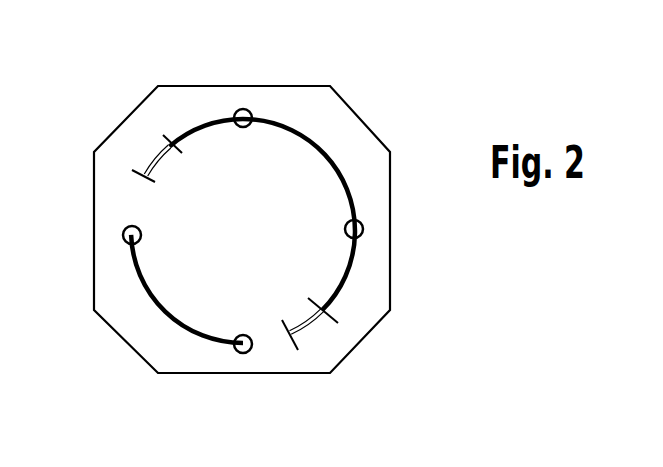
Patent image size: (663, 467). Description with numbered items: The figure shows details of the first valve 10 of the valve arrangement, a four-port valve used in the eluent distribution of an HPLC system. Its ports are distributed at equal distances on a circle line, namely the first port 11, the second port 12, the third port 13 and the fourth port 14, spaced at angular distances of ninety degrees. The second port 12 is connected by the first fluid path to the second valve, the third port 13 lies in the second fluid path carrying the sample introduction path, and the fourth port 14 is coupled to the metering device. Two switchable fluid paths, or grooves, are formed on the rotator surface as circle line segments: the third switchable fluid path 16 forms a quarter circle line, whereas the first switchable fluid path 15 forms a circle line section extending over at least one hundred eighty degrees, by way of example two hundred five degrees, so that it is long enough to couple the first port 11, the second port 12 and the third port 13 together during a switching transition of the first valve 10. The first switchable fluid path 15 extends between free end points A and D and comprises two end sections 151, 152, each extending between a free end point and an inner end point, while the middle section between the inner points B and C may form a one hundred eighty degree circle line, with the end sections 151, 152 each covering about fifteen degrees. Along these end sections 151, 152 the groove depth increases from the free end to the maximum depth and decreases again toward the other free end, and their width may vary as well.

The first valve 10 is at (330, 86).
The first port 11 is at (363, 228).
The second port 12 is at (244, 109).
The third port 13 is at (243, 353).
The fourth port 14 is at (123, 235).
The first switchable fluid path 15 is at (335, 158).
The third switchable fluid path 16 is at (162, 312).
The end section 151 is at (308, 327).
The end section 152 is at (157, 157).